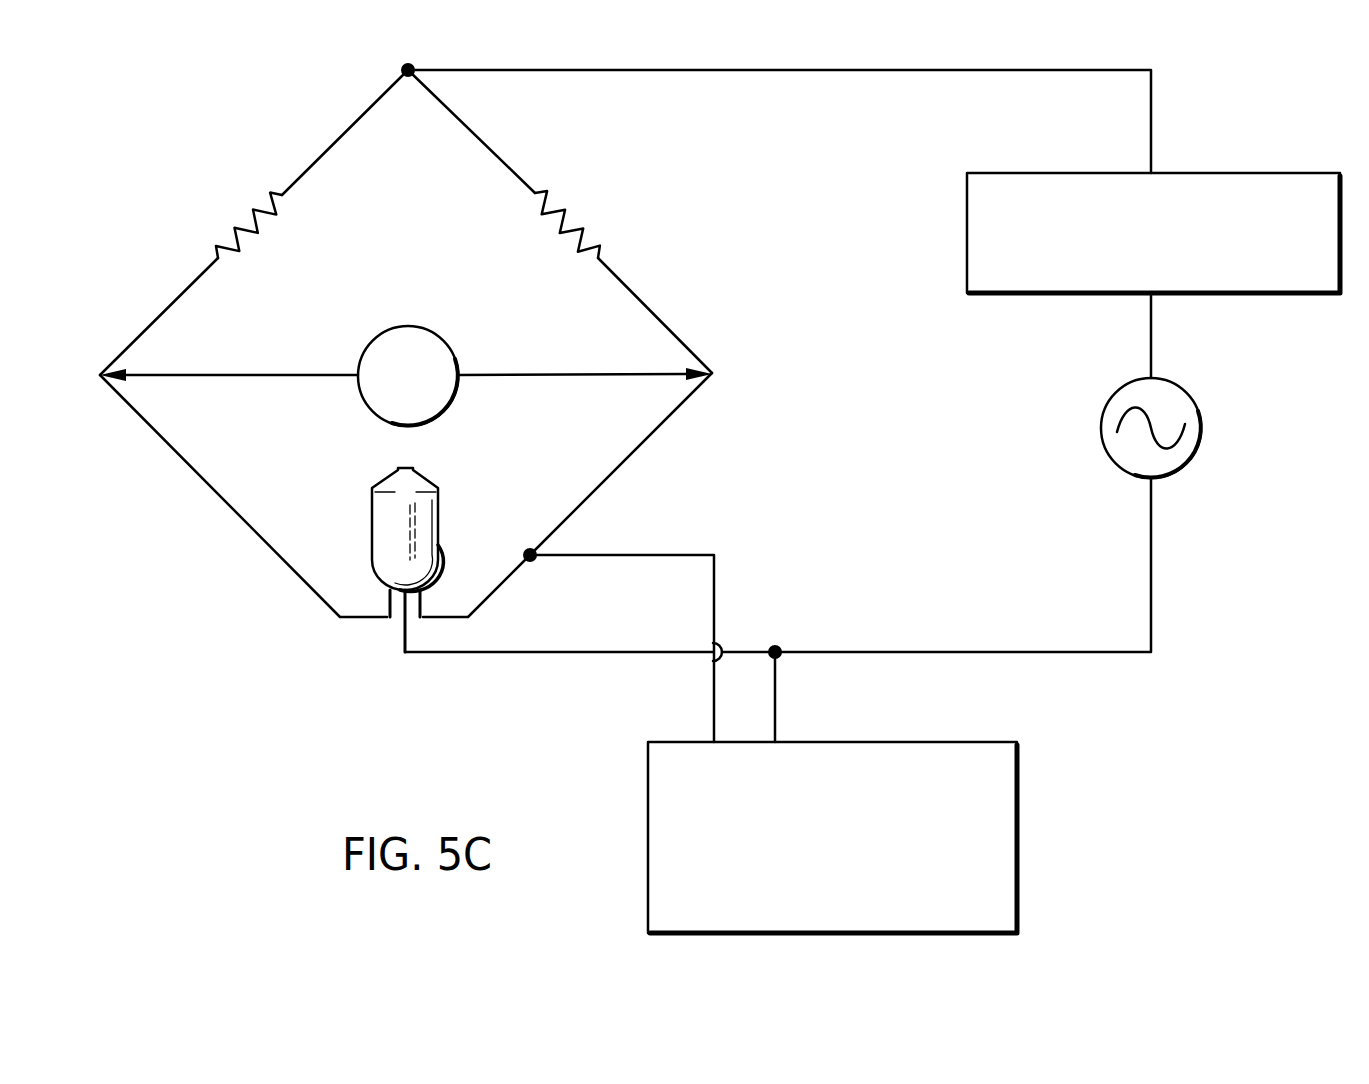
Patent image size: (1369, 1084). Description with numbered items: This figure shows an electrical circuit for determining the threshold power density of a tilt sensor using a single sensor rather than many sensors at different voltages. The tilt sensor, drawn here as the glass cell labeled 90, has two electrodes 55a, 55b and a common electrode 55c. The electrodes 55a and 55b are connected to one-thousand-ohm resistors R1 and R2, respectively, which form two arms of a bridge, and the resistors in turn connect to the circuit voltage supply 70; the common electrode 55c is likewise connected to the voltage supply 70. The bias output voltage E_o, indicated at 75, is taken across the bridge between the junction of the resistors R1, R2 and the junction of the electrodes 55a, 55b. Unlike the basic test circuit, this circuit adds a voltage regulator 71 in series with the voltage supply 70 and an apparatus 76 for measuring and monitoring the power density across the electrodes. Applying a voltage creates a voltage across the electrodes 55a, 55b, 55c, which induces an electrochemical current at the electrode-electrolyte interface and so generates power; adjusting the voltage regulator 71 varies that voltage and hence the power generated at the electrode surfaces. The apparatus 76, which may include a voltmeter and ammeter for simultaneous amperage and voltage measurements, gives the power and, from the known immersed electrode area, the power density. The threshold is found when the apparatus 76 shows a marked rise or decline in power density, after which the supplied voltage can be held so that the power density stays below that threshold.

The resistor R1 is at (237, 212).
The resistor R2 is at (577, 215).
The circuit voltage supply 70 is at (1196, 388).
The voltage regulator 71 is at (1203, 173).
The output voltage meter E0 75 is at (364, 419).
The apparatus for measuring and monitoring the power density 76 is at (1015, 742).
The sensing tube 90 is at (364, 541).
The electrode 55a is at (388, 620).
The electrode 55b is at (423, 620).
The common electrode 55c is at (403, 622).